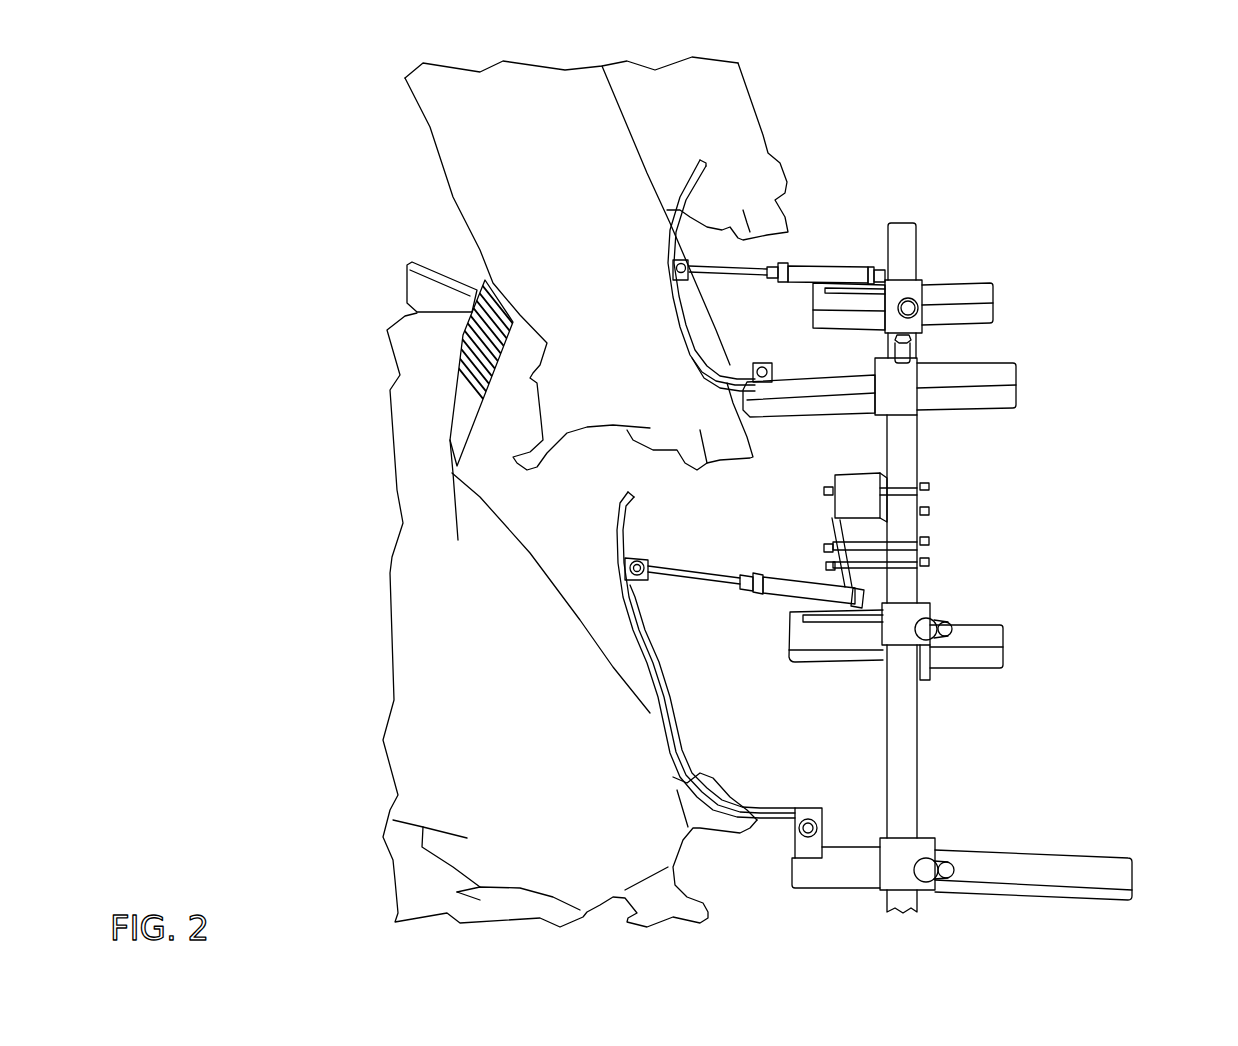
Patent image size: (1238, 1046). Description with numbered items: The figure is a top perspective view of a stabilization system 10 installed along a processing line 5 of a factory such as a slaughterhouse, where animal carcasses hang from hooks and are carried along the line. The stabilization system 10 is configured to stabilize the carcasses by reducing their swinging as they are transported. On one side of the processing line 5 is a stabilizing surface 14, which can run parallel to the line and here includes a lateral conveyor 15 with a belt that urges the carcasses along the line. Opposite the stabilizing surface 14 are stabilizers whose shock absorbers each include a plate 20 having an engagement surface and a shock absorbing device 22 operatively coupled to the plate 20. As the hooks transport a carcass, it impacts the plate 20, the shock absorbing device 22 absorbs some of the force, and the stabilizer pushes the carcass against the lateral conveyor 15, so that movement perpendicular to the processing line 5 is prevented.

The stabilization system 10 is at (1085, 328).
The processing line 5 is at (783, 690).
The stabilizing surface 14 is at (475, 333).
The lateral conveyor 15 is at (488, 372).
The plate 20 is at (652, 663).
The shock absorbing device 22 is at (772, 580).